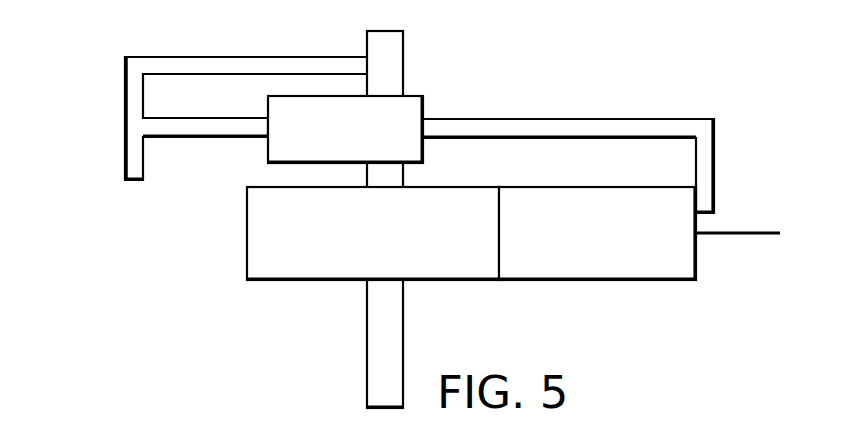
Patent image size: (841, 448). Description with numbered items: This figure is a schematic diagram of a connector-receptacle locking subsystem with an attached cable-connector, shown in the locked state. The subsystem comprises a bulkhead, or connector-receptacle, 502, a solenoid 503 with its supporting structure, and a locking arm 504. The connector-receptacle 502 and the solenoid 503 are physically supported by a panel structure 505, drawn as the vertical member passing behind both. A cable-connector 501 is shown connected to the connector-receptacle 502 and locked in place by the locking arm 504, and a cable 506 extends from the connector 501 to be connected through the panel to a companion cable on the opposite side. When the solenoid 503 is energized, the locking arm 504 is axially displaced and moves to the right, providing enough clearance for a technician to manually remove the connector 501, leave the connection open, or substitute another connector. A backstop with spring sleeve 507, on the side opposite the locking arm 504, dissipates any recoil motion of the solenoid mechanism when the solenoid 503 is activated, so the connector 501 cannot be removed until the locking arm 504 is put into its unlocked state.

The cable-connector 501 is at (698, 275).
The bulkhead (connector-receptacle) 502 is at (246, 228).
The solenoid 503 is at (427, 107).
The locking arm 504 is at (715, 127).
The panel structure 505 is at (368, 330).
The cable 506 is at (738, 232).
The backstop with spring sleeve 507 is at (125, 108).